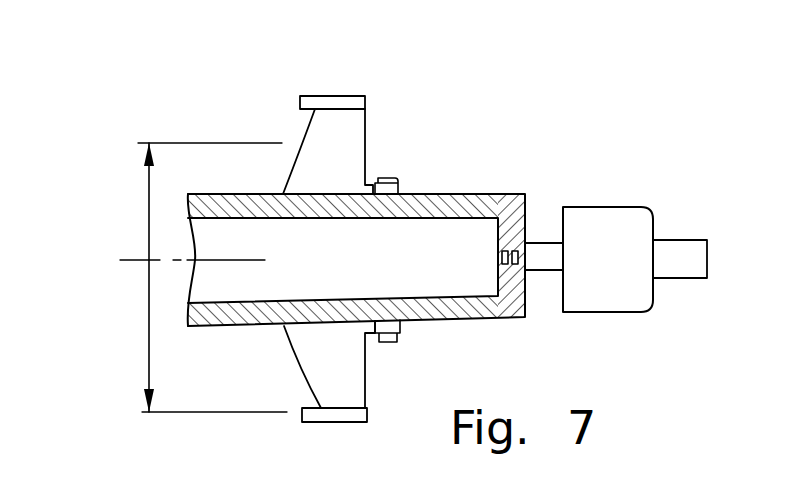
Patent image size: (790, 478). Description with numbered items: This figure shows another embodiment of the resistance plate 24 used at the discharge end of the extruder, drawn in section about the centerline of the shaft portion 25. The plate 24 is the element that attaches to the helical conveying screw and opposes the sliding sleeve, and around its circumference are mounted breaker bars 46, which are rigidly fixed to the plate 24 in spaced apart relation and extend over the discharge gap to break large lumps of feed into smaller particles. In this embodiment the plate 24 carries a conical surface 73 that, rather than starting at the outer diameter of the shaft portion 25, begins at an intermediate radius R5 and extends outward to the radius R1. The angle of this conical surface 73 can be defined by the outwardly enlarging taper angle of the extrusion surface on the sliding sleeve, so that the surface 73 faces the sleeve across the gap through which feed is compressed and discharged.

The plate 24 is at (368, 146).
The shaft portion 25 is at (262, 325).
The breaker bars 46 is at (338, 96).
The surface 73 is at (302, 127).
The intermediate radius R5 is at (148, 206).
The radius R1 is at (148, 352).